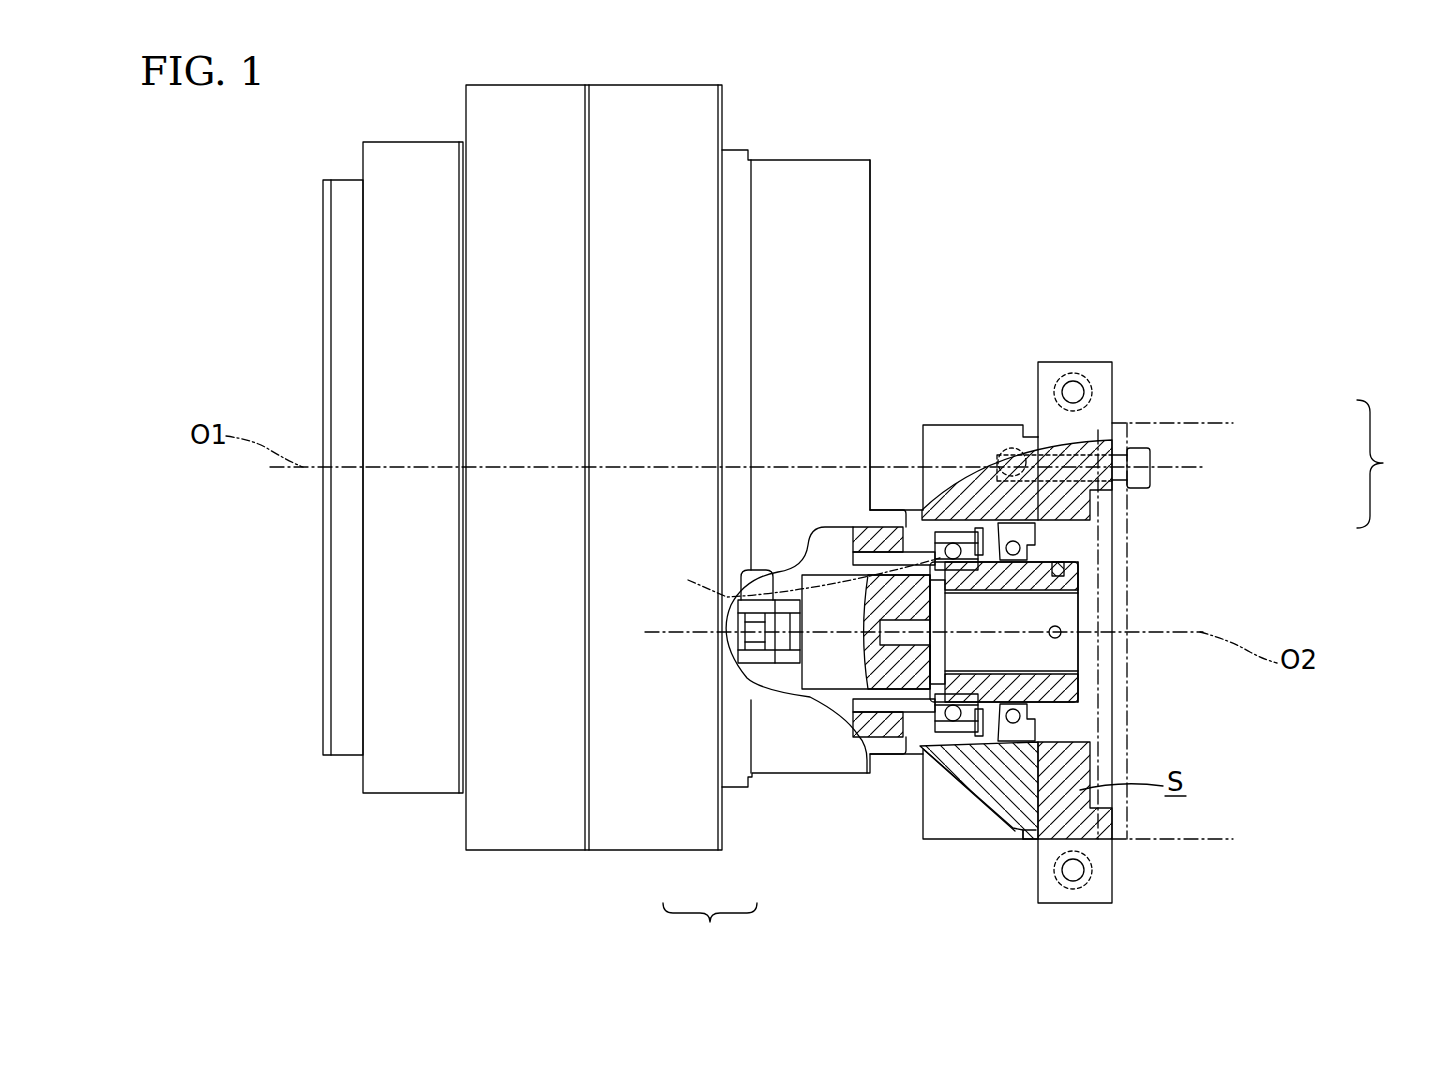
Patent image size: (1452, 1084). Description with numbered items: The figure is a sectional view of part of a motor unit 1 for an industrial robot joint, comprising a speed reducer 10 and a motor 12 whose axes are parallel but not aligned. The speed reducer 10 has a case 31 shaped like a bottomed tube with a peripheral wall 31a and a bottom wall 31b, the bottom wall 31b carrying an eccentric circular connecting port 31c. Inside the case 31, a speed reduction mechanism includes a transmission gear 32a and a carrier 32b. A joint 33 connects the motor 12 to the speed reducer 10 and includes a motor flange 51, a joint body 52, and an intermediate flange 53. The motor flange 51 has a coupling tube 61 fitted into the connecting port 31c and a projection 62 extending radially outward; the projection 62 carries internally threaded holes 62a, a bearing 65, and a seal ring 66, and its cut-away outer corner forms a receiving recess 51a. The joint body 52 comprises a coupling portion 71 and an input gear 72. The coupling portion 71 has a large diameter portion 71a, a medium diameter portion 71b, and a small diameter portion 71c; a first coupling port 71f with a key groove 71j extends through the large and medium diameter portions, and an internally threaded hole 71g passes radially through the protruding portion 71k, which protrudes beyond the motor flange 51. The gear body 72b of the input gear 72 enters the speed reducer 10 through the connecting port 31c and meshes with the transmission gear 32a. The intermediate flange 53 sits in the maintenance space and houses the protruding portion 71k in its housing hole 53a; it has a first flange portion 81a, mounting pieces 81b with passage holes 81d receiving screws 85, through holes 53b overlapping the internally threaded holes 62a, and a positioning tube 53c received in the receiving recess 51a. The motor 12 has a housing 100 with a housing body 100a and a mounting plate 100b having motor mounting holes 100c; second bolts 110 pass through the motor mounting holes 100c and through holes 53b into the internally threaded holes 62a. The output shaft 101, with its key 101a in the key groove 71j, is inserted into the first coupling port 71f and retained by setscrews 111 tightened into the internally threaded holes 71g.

The motor unit 1 is at (1272, 105).
The speed reducer 10 is at (808, 98).
The motor 12 is at (1160, 422).
The case 31 is at (466, 100).
The peripheral wall 31a is at (527, 838).
The bottom wall 31b is at (870, 210).
The connecting port 31c is at (920, 540).
The transmission gear 32a is at (767, 582).
The carrier 32b is at (341, 603).
The joint 33 is at (1000, 340).
The motor flange 51 is at (950, 847).
The receiving recess 51a is at (1040, 842).
The joint body 52 is at (710, 929).
The intermediate flange 53 is at (1112, 902).
The housing hole 53a is at (1078, 740).
The through hole 53b is at (1112, 440).
The positioning tube 53c is at (1027, 838).
The coupling tube 61 is at (867, 730).
The projection 62 is at (943, 828).
The internally threaded hole 62a is at (1000, 470).
The bearing 65 is at (955, 538).
The seal ring 66 is at (1018, 540).
The coupling portion 71 is at (810, 695).
The large diameter portion 71a is at (1018, 833).
The medium diameter portion 71b is at (903, 750).
The small diameter portion 71c is at (848, 678).
The first coupling port 71f is at (1058, 665).
The internally threaded hole 71g is at (1080, 548).
The key groove 71j is at (1078, 595).
The protruding portion 71k is at (1067, 688).
The input gear 72 is at (765, 668).
The gear body 72b is at (785, 655).
The first flange portion 81a is at (1100, 828).
The mounting piece 81b is at (1112, 372).
The passage hole 81d is at (1075, 400).
The screw 85 is at (1068, 385).
The housing 100 is at (1397, 464).
The housing body 100a is at (1233, 423).
The mounting plate 100b is at (1127, 520).
The motor mounting hole 100c is at (1150, 450).
The output shaft 101 is at (915, 810).
The key 101a is at (784, 577).
The second bolt 110 is at (1150, 480).
The setscrew 111 is at (1062, 575).